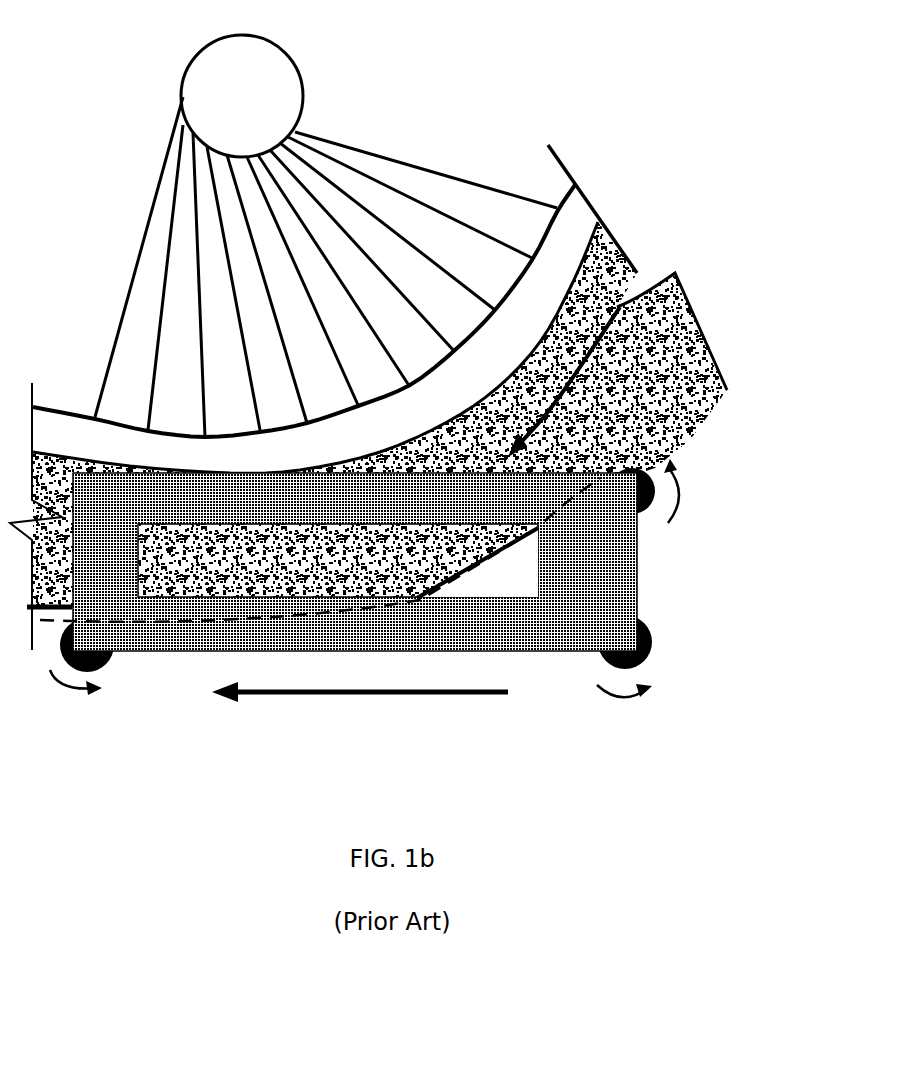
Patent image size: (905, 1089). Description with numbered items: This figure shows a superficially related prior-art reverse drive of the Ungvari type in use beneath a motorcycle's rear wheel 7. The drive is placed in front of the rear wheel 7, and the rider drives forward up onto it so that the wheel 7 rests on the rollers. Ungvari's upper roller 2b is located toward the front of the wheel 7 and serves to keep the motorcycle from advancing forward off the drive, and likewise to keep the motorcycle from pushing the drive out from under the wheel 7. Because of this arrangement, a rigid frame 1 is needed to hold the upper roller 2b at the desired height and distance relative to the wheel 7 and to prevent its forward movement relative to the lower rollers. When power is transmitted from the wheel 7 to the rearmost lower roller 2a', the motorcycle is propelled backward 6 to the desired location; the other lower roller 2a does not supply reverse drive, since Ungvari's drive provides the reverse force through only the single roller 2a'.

The rigid frame 1 is at (638, 565).
The lower roller 2a is at (670, 656).
The rearmost lower roller 2a' is at (123, 672).
The upper roller 2b is at (648, 463).
The backward propulsion direction 6 is at (433, 697).
The rear wheel 7 is at (629, 265).